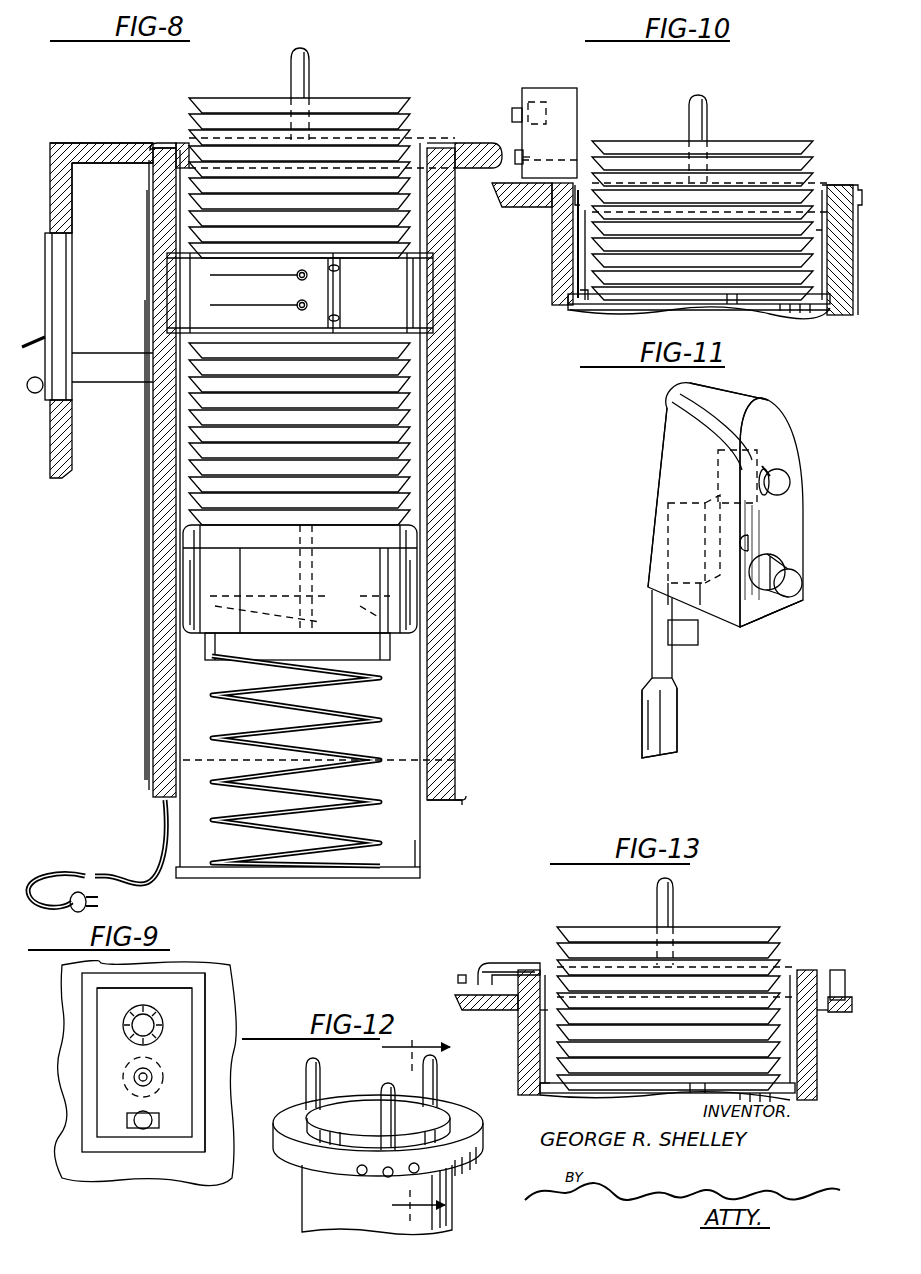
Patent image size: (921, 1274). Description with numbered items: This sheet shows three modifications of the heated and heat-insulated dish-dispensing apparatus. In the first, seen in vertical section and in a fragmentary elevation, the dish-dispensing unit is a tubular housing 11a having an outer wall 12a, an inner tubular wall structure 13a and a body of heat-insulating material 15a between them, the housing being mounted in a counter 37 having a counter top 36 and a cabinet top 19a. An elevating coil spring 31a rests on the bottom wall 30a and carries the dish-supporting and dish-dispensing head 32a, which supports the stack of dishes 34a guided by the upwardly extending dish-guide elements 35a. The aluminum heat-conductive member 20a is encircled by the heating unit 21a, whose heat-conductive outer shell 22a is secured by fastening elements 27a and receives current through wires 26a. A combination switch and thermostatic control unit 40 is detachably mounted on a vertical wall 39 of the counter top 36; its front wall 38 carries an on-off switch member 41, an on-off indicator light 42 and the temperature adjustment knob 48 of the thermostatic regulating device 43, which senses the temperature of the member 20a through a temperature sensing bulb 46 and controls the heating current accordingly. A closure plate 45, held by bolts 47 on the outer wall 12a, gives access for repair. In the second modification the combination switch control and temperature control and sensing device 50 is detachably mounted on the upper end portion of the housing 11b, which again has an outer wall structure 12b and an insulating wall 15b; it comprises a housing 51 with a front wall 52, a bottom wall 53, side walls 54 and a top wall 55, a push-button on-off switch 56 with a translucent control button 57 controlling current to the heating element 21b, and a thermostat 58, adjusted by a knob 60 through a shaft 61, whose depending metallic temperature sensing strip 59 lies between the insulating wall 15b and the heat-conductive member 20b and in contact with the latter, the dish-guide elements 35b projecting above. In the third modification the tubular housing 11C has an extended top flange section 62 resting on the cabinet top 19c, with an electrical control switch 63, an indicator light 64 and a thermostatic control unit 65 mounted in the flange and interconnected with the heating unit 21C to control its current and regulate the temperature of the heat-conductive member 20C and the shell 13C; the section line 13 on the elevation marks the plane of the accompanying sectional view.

In FIG. 8, the tubular housing 11a is at (458, 562).
In FIG. 9, the tubular housing 11a is at (226, 1016).
In FIG. 8, the outer wall 12a is at (425, 735).
In FIG. 8, the inner tubular wall structure 13a is at (416, 842).
In FIG. 8, the heat-insulating material 15a is at (458, 808).
In FIG. 8, the cabinet top 19a is at (490, 142).
In FIG. 8, the heat-conductive member 20a is at (458, 700).
In FIG. 8, the heating unit 21a is at (418, 297).
In FIG. 8, the outer aluminized steel shell 22a is at (437, 272).
In FIG. 8, the wires 26a is at (148, 748).
In FIG. 8, the fastening elements 27a is at (336, 272).
In FIG. 8, the bottom wall 30a is at (362, 878).
In FIG. 8, the elevating coil spring 31a is at (348, 714).
In FIG. 8, the dish-supporting and dish-dispensing head 32a is at (400, 560).
In FIG. 8, the stack of dishes 34a is at (400, 430).
In FIG. 8, the dish-guide elements 35a is at (308, 74).
In FIG. 8, the counter top 36 is at (92, 140).
In FIG. 8, the counter 37 is at (100, 168).
In FIG. 8, the front wall 38 is at (42, 220).
In FIG. 8, the vertical wall 39 is at (60, 240).
In FIG. 9, the vertical wall 39 is at (215, 1080).
In FIG. 8, the combination switch and thermostatic control unit 40 is at (60, 322).
In FIG. 9, the combination switch and thermostatic control unit 40 is at (175, 1130).
In FIG. 8, the on-off switch member 41 is at (32, 343).
In FIG. 9, the on-off switch member 41 is at (151, 1083).
In FIG. 8, the on-off indicator light 42 is at (35, 395).
In FIG. 9, the on-off indicator light 42 is at (143, 1130).
In FIG. 9, the thermostatic temperature regulating device 43 is at (172, 1016).
In FIG. 8, the closure plate 45 is at (146, 446).
In FIG. 8, the temperature sensing bulb 46 is at (150, 480).
In FIG. 8, the bolts 47 is at (160, 145).
In FIG. 9, the bolts 47 is at (88, 1062).
In FIG. 9, the temperature adjustment knob 48 is at (156, 1013).
In FIG. 10, the combination switch control and thermostatic temperature control and sensing devi 50 is at (557, 86).
In FIG. 11, the combination switch control and thermostatic temperature control and sensing devi 50 is at (790, 522).
In FIG. 11, the housing 51 is at (790, 412).
In FIG. 11, the front wall 52 is at (775, 538).
In FIG. 11, the bottom wall 53 is at (748, 612).
In FIG. 11, the side walls 54 is at (672, 490).
In FIG. 11, the top wall 55 is at (745, 396).
In FIG. 10, the push-button on-off switch 56 is at (570, 232).
In FIG. 11, the push-button on-off switch 56 is at (780, 462).
In FIG. 13, the push-button on-off switch 56 is at (460, 974).
In FIG. 10, the translucent control button 57 is at (518, 106).
In FIG. 11, the translucent control button 57 is at (790, 472).
In FIG. 11, the thermostatic temperature regulating device 58 is at (672, 552).
In FIG. 10, the temperature sensing strip 59 is at (570, 270).
In FIG. 11, the temperature sensing strip 59 is at (665, 760).
In FIG. 10, the adjustment knob 60 is at (512, 110).
In FIG. 11, the adjustment knob 60 is at (800, 590).
In FIG. 11, the shaft 61 is at (788, 566).
In FIG. 10, the housing 11b is at (564, 322).
In FIG. 10, the outer wall structure 12b is at (560, 308).
In FIG. 10, the insulating wall 15b is at (835, 183).
In FIG. 10, the heat-conductive member 20b is at (600, 296).
In FIG. 10, the heating element 21b is at (797, 311).
In FIG. 10, the dish-guide elements 35b is at (708, 120).
In FIG. 12, the extended top flange section 62 is at (290, 1122).
In FIG. 13, the extended top flange section 62 is at (503, 962).
In FIG. 12, the electrical control switch 63 is at (357, 1172).
In FIG. 12, the indicator light 64 is at (383, 1176).
In FIG. 12, the thermostatic control unit 65 is at (420, 1168).
In FIG. 12, the tubular housing 11C is at (454, 1204).
In FIG. 13, the tubular housing 11C is at (811, 968).
In FIG. 12, the section line 13 is at (408, 1132).
In FIG. 13, the shell 13C is at (540, 1064).
In FIG. 13, the cabinet top 19c is at (845, 1012).
In FIG. 13, the heat-conductive member 20C is at (534, 1041).
In FIG. 13, the heating unit 21C is at (660, 1095).